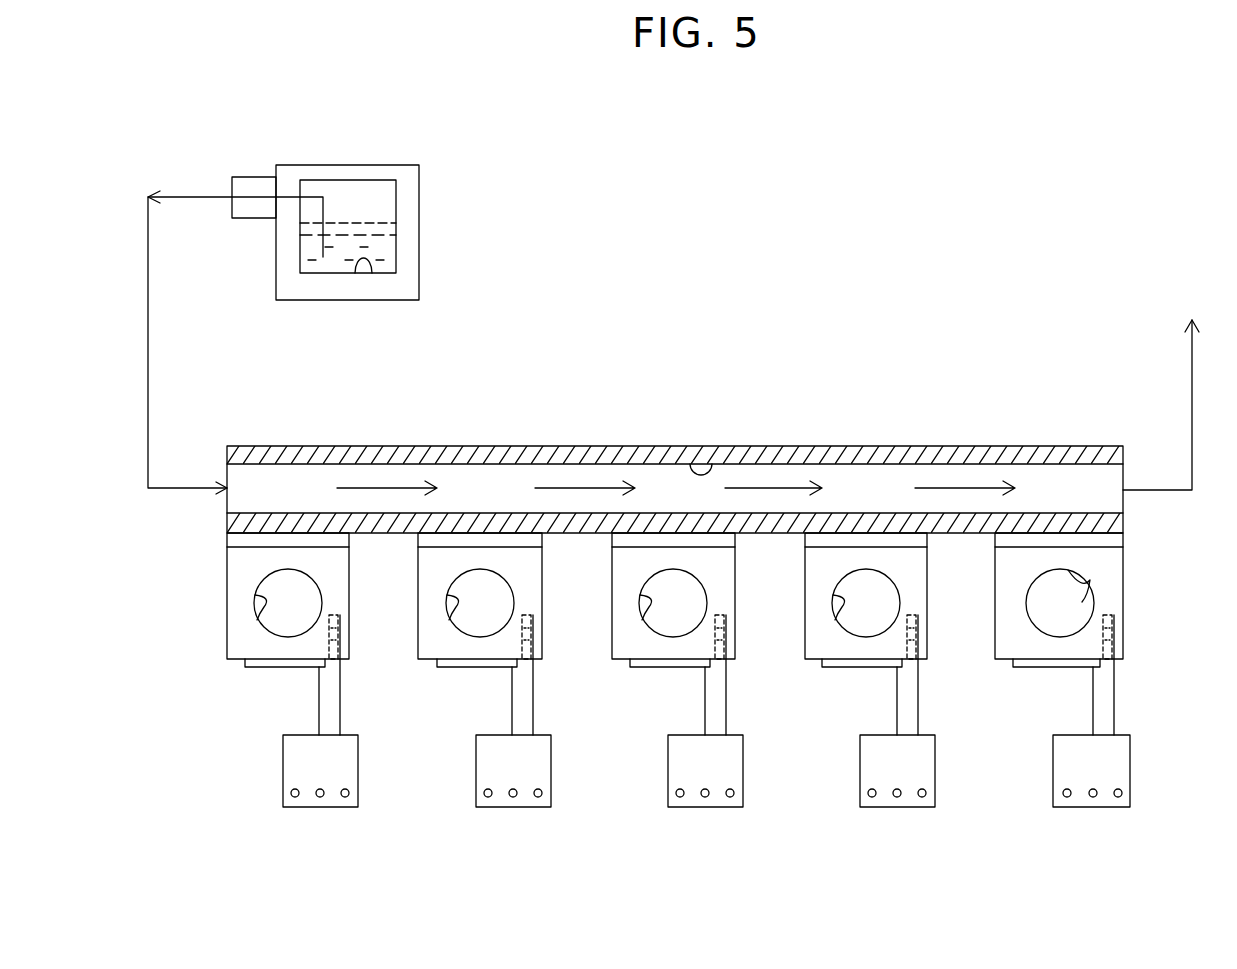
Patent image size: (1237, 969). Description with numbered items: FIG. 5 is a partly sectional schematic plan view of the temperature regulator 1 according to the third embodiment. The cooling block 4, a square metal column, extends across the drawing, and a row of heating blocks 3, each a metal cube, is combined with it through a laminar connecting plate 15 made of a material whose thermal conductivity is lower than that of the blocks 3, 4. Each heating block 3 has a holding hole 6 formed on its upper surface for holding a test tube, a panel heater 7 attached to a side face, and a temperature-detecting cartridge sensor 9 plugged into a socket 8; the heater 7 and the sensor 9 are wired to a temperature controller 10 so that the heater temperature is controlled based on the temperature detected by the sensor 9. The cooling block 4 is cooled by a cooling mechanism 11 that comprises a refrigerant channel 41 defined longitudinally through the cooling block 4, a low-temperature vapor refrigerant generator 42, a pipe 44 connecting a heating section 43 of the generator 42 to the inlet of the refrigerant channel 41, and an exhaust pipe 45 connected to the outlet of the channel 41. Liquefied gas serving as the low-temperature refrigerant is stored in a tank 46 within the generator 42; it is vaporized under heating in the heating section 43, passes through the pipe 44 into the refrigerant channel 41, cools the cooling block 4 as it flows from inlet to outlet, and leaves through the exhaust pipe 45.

The temperature regulator 1 is at (690, 146).
The heating block 3 is at (237, 583).
The cooling block 4 is at (890, 450).
The holding hole 6 is at (268, 610).
The panel heater 7 is at (262, 668).
The socket 8 is at (345, 630).
The cartridge sensor 9 is at (348, 656).
The temperature controller 10 is at (303, 800).
The cooling mechanism 11 is at (428, 195).
The connecting plate 15 is at (237, 540).
The refrigerant channel 41 is at (712, 463).
The low-temperature vapor refrigerant generator 42 is at (413, 251).
The heating section 43 is at (250, 183).
The pipe 44 is at (150, 347).
The exhaust pipe 45 is at (1190, 385).
The tank 46 is at (366, 265).